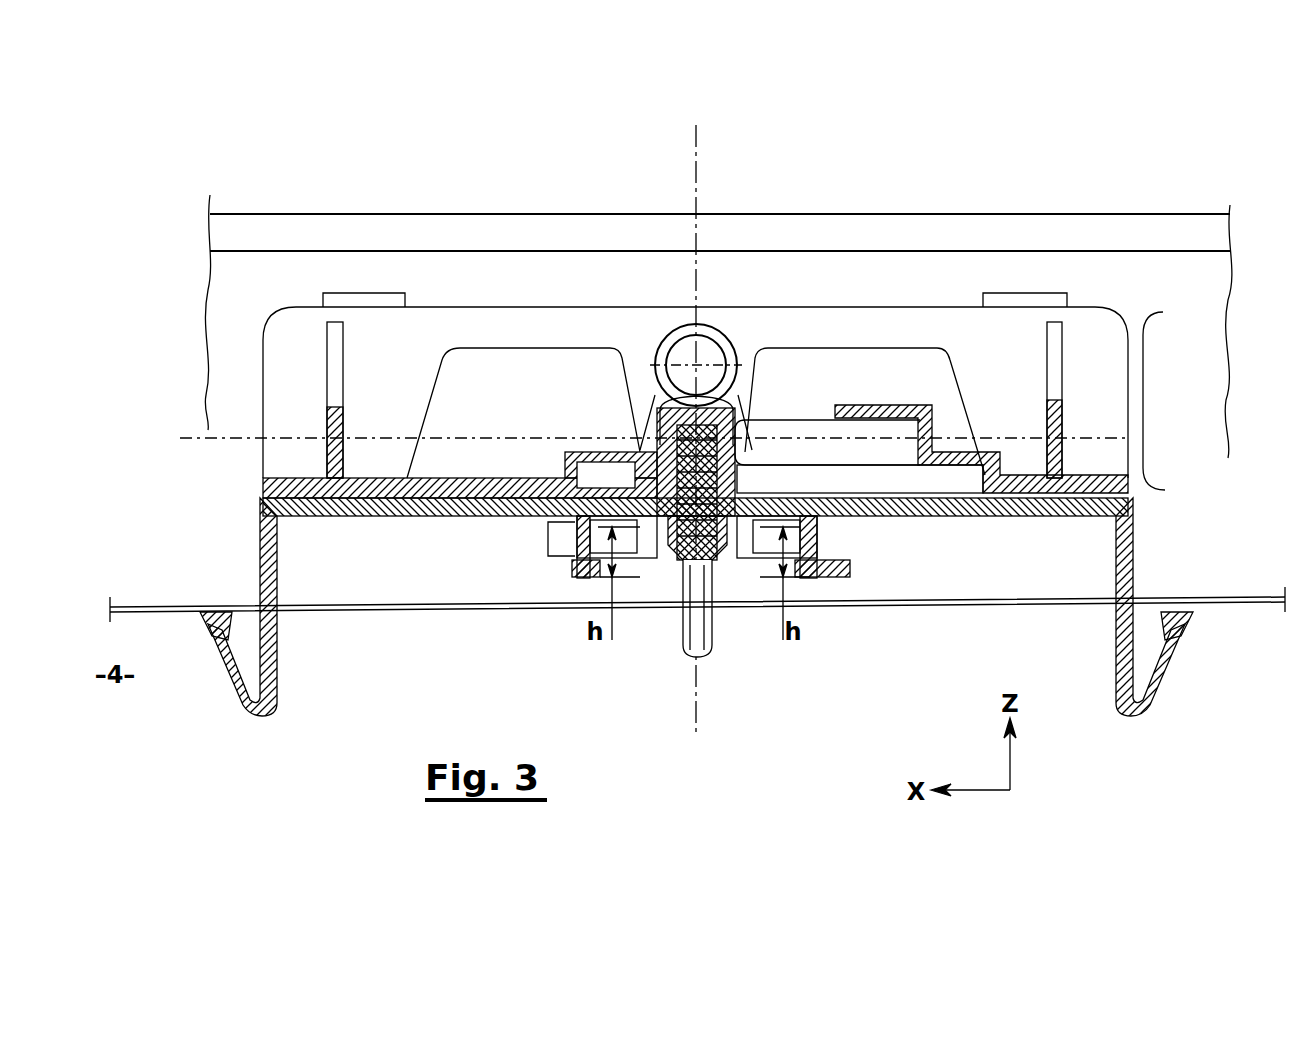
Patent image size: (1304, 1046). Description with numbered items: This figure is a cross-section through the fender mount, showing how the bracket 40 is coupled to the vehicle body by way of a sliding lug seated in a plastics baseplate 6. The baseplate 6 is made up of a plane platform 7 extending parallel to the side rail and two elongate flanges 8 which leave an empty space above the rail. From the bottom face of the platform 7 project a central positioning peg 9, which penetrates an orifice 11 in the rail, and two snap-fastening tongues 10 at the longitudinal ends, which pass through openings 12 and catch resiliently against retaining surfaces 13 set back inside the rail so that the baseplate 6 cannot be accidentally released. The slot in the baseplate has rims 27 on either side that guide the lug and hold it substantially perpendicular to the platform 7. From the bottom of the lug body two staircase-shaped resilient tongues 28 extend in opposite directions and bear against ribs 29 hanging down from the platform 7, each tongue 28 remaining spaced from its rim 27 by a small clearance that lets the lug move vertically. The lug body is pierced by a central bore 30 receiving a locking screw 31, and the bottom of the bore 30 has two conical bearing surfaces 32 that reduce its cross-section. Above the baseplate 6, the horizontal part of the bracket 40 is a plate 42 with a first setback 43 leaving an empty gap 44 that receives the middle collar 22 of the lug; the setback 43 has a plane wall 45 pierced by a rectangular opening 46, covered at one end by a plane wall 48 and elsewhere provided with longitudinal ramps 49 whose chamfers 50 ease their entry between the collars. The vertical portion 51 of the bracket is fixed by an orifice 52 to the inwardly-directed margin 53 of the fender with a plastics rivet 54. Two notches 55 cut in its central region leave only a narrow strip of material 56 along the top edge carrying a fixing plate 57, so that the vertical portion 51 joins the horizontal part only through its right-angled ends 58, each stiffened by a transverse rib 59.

The baseplate 6 is at (216, 543).
The plane platform 7 is at (340, 520).
The elongate flanges 8 is at (396, 578).
The positioning peg 9 is at (712, 615).
The snap-fastening tongues 10 is at (270, 690).
The orifice 11 is at (681, 622).
The openings 12 is at (265, 606).
The retaining surfaces 13 is at (196, 630).
The middle collar 22 is at (557, 462).
The rims 27 is at (596, 550).
The resilient tongues 28 is at (580, 583).
The ribs 29 is at (578, 575).
The central bore 30 is at (752, 400).
The locking screw 31 is at (637, 368).
The conical bearing surfaces 32 is at (662, 580).
The bracket 40 is at (242, 343).
The plate 42 is at (1165, 490).
The first setback 43 is at (948, 442).
The empty gap 44 is at (972, 518).
The plane wall 45 is at (598, 446).
The rectangular opening 46 is at (800, 420).
The plane wall 48 is at (842, 393).
The longitudinal ramps 49 is at (880, 514).
The chamfers 50 is at (915, 514).
The vertical portion 51 is at (1186, 405).
The orifice 52 is at (712, 342).
The inwardly-directed margin 53 is at (232, 285).
The rivet 54 is at (695, 318).
The notches 55 is at (472, 368).
The narrow strip of material 56 is at (540, 330).
The fixing plate 57 is at (657, 322).
The ends 58 is at (285, 395).
The transverse rib 59 is at (327, 425).